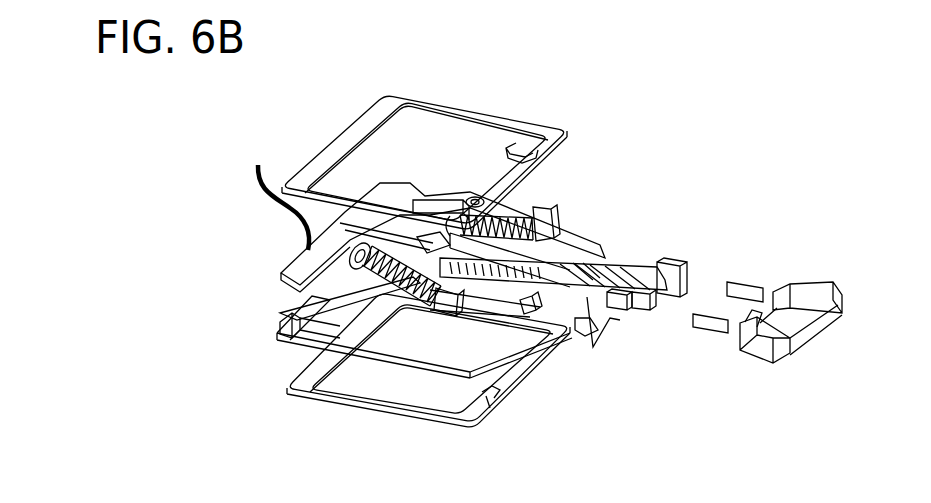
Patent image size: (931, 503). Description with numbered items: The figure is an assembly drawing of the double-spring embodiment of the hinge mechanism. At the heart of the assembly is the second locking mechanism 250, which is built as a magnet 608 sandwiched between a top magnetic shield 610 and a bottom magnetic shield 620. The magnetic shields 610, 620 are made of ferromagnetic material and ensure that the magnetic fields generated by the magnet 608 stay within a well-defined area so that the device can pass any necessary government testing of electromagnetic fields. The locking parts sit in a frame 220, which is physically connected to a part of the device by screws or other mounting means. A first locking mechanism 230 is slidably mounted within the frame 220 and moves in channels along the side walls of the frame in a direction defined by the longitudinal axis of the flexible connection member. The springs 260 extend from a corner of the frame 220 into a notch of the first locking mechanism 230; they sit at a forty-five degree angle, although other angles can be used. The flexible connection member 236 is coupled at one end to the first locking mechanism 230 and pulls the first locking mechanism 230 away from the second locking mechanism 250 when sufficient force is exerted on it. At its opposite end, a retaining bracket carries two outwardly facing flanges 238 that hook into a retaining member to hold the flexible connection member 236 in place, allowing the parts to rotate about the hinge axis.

The top magnetic shield 610 is at (328, 157).
The bottom magnetic shield 620 is at (317, 375).
The magnet 608 is at (269, 197).
The second locking mechanism 250 is at (300, 262).
The springs 260 is at (545, 210).
The first locking mechanism 230 is at (295, 308).
The frame 220 is at (290, 330).
The flexible connection member 236 is at (610, 325).
The outwardly facing flanges 238 is at (777, 355).